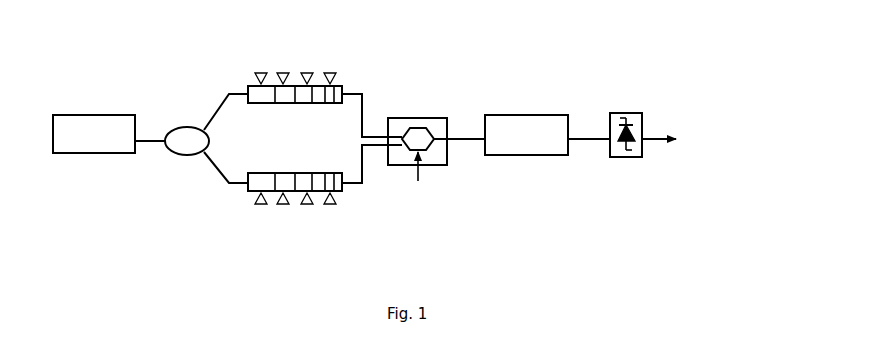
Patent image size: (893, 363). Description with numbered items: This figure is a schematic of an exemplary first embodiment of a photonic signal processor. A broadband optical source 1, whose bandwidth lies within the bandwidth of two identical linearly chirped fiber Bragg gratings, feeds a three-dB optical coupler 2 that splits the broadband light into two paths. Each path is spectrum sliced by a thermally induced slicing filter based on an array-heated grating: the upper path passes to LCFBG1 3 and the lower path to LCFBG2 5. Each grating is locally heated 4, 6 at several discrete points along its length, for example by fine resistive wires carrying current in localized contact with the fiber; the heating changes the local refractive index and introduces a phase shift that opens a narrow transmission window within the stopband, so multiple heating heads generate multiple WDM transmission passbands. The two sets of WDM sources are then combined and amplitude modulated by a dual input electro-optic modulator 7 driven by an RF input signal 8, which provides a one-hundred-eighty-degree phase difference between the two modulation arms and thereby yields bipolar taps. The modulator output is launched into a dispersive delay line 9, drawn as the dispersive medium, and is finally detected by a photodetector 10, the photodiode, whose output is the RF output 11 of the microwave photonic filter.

The broadband optical source 1 is at (76, 100).
The optical coupler 2 is at (178, 114).
The LCFBG1 3 is at (314, 120).
The local heating 4 is at (277, 43).
The LCFBG2 5 is at (316, 158).
The local heating 6 is at (313, 210).
The dual input electro-optic modulator 7 is at (408, 109).
The RF input signal 8 is at (440, 207).
The dispersive delay line 9 is at (526, 113).
The photodetector 10 is at (631, 164).
The RF output 11 is at (713, 126).